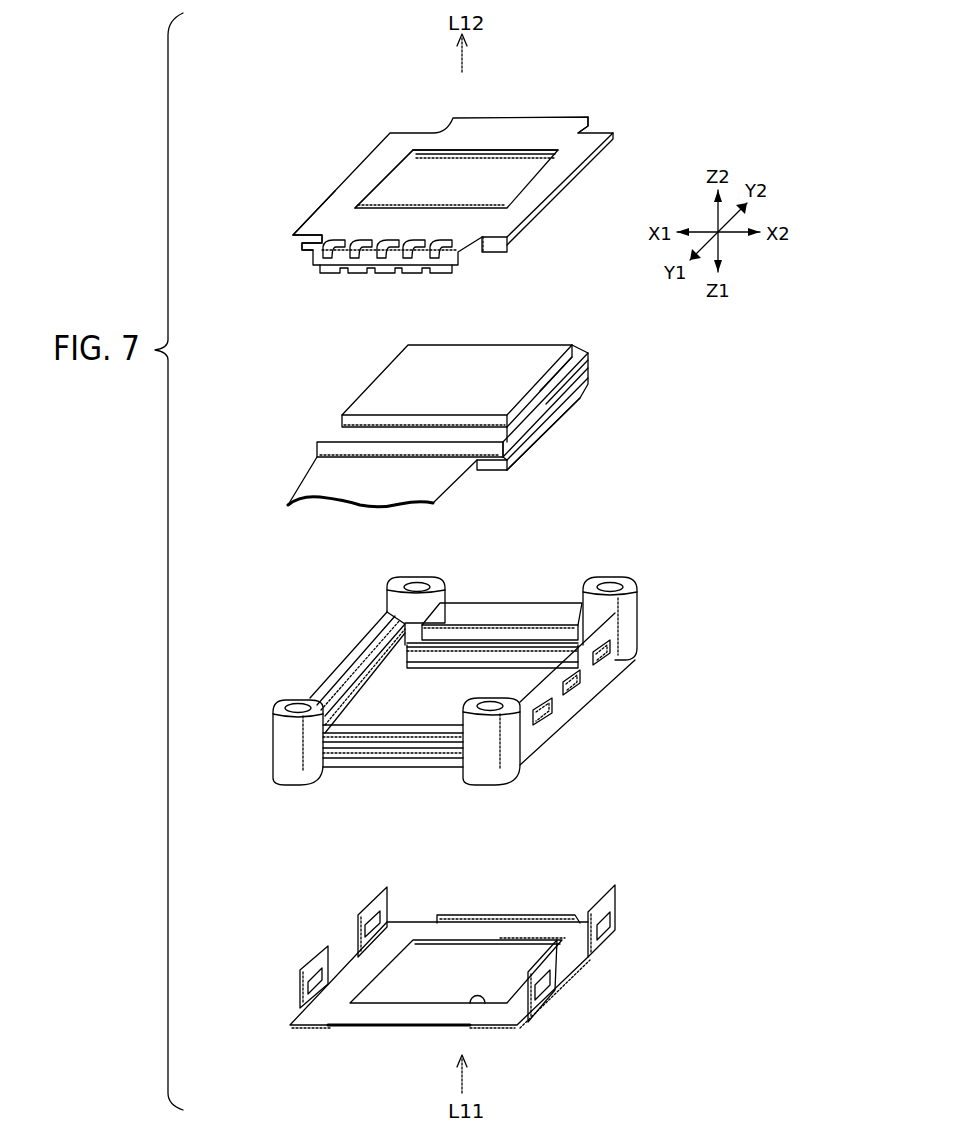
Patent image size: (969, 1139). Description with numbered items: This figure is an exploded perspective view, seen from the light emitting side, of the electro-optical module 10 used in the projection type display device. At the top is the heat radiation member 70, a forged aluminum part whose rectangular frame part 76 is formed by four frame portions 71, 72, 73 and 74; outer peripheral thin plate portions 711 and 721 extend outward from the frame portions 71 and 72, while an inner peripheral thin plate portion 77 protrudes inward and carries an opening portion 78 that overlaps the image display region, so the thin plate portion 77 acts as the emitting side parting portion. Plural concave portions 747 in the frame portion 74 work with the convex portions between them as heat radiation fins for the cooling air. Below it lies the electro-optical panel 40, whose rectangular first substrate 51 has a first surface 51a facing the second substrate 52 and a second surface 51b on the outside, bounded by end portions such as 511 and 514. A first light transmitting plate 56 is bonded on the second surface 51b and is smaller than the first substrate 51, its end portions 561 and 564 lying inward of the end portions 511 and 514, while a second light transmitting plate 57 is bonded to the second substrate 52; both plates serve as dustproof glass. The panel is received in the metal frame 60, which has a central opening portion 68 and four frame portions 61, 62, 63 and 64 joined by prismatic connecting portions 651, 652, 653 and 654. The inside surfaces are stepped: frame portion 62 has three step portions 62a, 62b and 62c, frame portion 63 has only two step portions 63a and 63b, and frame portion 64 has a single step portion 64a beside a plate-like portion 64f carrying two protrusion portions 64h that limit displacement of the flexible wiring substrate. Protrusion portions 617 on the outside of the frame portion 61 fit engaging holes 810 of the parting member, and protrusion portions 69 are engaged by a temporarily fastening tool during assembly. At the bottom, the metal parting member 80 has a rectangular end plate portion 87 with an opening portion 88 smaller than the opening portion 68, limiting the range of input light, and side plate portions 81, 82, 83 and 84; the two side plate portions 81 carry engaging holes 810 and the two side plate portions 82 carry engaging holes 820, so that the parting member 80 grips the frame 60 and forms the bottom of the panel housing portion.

The electro-optical module 10 is at (696, 110).
The heat radiation member 70 is at (332, 181).
The frame portion 71 is at (509, 252).
The outer peripheral thin plate portion 711 is at (553, 194).
The frame portion 72 is at (298, 245).
The outer peripheral thin plate portion 721 is at (307, 217).
The frame portion 73 is at (588, 130).
The frame portion 74 is at (455, 267).
The concave portions 747 is at (340, 243).
The rectangular frame part 76 is at (398, 153).
The inner peripheral thin plate portion 77 is at (378, 183).
The opening portion 78 is at (488, 150).
The electro-optical panel 40 is at (663, 330).
The first substrate 51 is at (586, 364).
The first surface 51a is at (514, 455).
The second surface 51b is at (505, 435).
The end portion 511 is at (545, 405).
The end portion 514 is at (342, 452).
The second substrate 52 is at (588, 378).
The first light transmitting plate 56 is at (573, 346).
The end portion 561 is at (548, 380).
The end portion 564 is at (358, 420).
The second light transmitting plate 57 is at (580, 397).
The frame 60 is at (258, 714).
The frame portion 61 is at (598, 677).
The protrusion portion 617 is at (602, 660).
The frame portion 62 is at (338, 658).
The step portion 62a is at (361, 703).
The step portion 62b is at (376, 683).
The step portion 62c is at (400, 665).
The frame portion 63 is at (502, 600).
The step portion 63a is at (518, 657).
The step portion 63b is at (543, 642).
The frame portion 64 is at (340, 764).
The step portion 64a is at (399, 722).
The plate-like portion 64f is at (440, 728).
The protrusion portions 64h is at (393, 736).
The opening portion 68 is at (477, 662).
The protrusion portion 69 is at (576, 685).
The connecting portion 651 is at (632, 613).
The connecting portion 652 is at (387, 592).
The connecting portion 653 is at (507, 763).
The connecting portion 654 is at (275, 753).
The parting member 80 is at (344, 956).
The side plate portion 81 is at (586, 935).
The engaging hole 810 is at (607, 932).
The side plate portion 82 is at (330, 970).
The engaging hole 820 is at (378, 915).
The side plate portion 83 is at (527, 915).
The side plate portion 84 is at (395, 1028).
The end plate portion 87 is at (585, 960).
The opening portion 88 is at (485, 995).